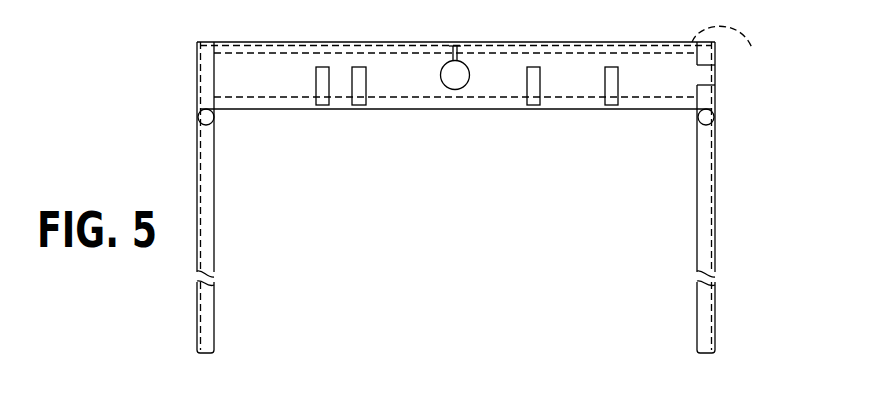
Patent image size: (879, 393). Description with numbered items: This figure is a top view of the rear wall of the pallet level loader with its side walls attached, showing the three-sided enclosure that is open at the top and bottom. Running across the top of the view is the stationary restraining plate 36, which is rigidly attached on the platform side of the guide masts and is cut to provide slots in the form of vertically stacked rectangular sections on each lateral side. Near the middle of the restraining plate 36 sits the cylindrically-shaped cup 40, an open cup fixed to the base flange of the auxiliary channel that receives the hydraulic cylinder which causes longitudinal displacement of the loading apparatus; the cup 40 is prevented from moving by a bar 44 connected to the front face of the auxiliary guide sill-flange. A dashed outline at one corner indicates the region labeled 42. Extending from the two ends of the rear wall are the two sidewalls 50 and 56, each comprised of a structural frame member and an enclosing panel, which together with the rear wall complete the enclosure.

The stationary restraining plate 36 is at (497, 110).
The cylindrically-shaped cup 40 is at (469, 73).
The hinged connection 42 is at (739, 47).
The bar 44 is at (460, 51).
The sidewall 50 is at (216, 240).
The sidewall 56 is at (697, 250).